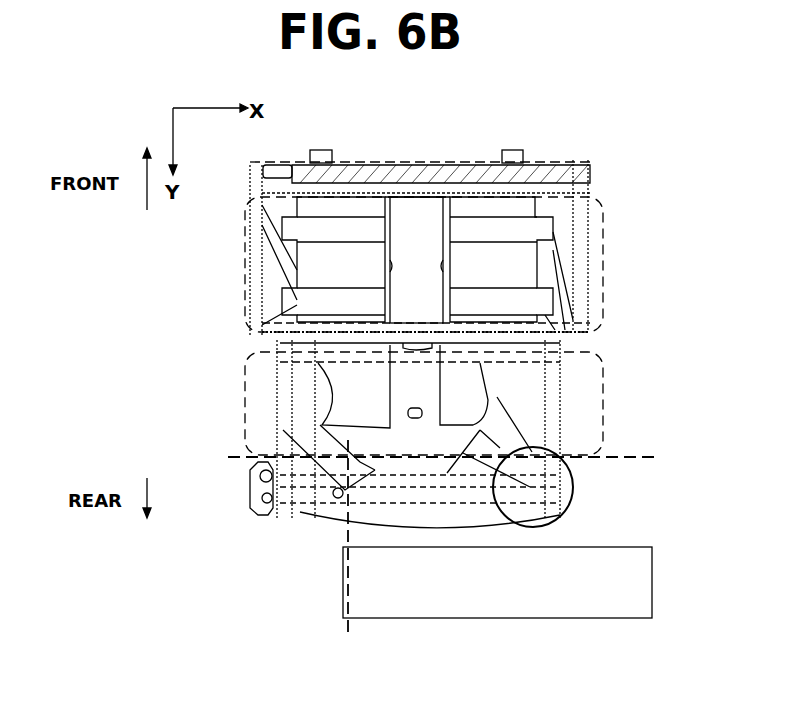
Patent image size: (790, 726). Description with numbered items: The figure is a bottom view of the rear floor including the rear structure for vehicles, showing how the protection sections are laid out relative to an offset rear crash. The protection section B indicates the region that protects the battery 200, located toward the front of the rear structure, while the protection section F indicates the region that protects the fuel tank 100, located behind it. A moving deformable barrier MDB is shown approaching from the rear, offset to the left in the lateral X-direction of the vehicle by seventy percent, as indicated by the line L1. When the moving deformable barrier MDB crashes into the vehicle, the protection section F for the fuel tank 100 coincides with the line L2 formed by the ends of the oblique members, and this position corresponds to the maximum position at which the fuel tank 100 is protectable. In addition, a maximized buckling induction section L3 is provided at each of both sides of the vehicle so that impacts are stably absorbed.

The fuel tank 100 is at (340, 397).
The battery 200 is at (313, 268).
The protection section for the battery B is at (432, 263).
The protection section for the fuel tank F is at (431, 403).
The offset line of the moving deformable barrier L1 is at (346, 550).
The line formed by the ends of the oblique members L2 is at (456, 459).
The maximized buckling induction section L3 is at (538, 497).
The moving deformable barrier MDB is at (497, 582).